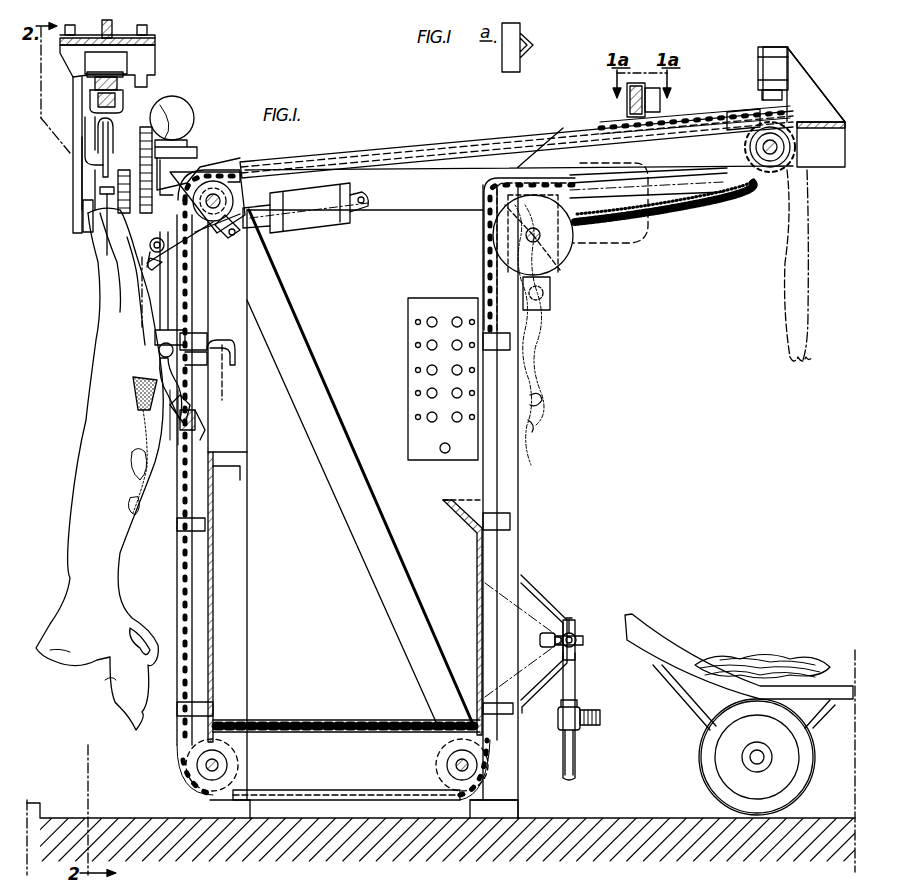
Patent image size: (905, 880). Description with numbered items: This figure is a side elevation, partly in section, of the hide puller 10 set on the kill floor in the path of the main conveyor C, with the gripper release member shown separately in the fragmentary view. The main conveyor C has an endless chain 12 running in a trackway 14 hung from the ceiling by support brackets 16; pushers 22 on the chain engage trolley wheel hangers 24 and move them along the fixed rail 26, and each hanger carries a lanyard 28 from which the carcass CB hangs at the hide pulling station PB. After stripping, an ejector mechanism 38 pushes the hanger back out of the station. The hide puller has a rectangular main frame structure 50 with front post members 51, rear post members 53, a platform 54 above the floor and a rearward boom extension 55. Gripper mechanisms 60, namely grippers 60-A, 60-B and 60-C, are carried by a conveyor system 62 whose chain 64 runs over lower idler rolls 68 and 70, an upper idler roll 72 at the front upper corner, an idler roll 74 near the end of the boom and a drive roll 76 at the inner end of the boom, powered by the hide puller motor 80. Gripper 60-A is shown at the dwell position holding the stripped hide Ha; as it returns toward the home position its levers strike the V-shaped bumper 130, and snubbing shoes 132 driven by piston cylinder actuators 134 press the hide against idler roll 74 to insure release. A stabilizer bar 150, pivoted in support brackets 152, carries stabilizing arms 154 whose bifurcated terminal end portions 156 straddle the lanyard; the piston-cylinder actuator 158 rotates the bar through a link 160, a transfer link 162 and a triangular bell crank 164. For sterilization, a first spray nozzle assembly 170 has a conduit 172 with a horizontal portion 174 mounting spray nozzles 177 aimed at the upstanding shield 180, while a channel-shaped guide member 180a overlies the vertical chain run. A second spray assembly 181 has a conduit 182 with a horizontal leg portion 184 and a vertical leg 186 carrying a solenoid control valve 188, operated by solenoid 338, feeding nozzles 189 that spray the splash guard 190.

In FIG. 1, the hide puller 10 is at (403, 210).
In FIG. 1, the endless chain 12 is at (107, 78).
In FIG. 1, the trackway 14 is at (97, 82).
In FIG. 1, the support brackets 16 is at (77, 54).
In FIG. 1, the pushers 22 is at (122, 111).
In FIG. 1, the trolley wheel hangers 24 is at (113, 148).
In FIG. 1, the fixed rail 26 is at (106, 173).
In FIG. 1, the lanyards 28 is at (103, 240).
In FIG. 1, the ejector mechanism 38 is at (185, 104).
In FIG. 1, the main frame structure 50 is at (520, 480).
In FIG. 1, the front post members 51 is at (242, 676).
In FIG. 1, the rear post members 53 is at (518, 795).
In FIG. 1, the platform 54 is at (334, 720).
In FIG. 1, the boom extension 55 is at (820, 165).
In FIG. 1, the gripper mechanisms 60 is at (190, 412).
In FIG. 1, the gripper mechanism 60-A is at (734, 112).
In FIG. 1, the gripper mechanism 60-B is at (193, 424).
In FIG. 1, the gripper mechanism 60-C is at (498, 610).
In FIG. 1, the conveyor system 62 is at (490, 262).
In FIG. 1, the chain 64 is at (484, 238).
In FIG. 1, the lower idler roll 68 is at (222, 768).
In FIG. 1, the lower idler roll 70 is at (447, 765).
In FIG. 1, the upper idler roll 72 is at (214, 193).
In FIG. 1, the idler roll 74 is at (776, 175).
In FIG. 1, the drive roll 76 is at (556, 262).
In FIG. 1, the hide puller motor 80 is at (627, 236).
In FIG. 1, the V-shaped bumper 130 is at (662, 104).
In FIG. 1A, the V-shaped bumper 130 is at (533, 44).
In FIG. 1, the snubbing shoes 132 is at (790, 100).
In FIG. 1, the piston cylinder actuators 134 is at (760, 62).
In FIG. 1, the bar 150 is at (80, 316).
In FIG. 1, the support brackets 152 is at (194, 268).
In FIG. 1, the stabilizing arms 154 is at (186, 290).
In FIG. 1, the bifurcated terminal end portions 156 is at (72, 228).
In FIG. 1, the piston-cylinder actuator 158 is at (312, 226).
In FIG. 1, the link 160 is at (100, 328).
In FIG. 1, the transfer link 162 is at (196, 240).
In FIG. 1, the bell crank 164 is at (266, 246).
In FIG. 1, the first spray nozzle assembly 170 is at (148, 366).
In FIG. 1, the conduit 172 is at (322, 364).
In FIG. 1, the lateral horizontally extending portion 174 is at (235, 363).
In FIG. 1, the spray nozzles 177 is at (150, 395).
In FIG. 1, the upstanding shield 180 is at (215, 581).
In FIG. 1, the channel-shaped guide member 180a is at (182, 700).
In FIG. 1, the second spray assembly 181 is at (610, 613).
In FIG. 1, the conduit 182 is at (624, 777).
In FIG. 1, the horizontal leg portion 184 is at (578, 646).
In FIG. 1, the vertical leg 186 is at (578, 745).
In FIG. 1, the solenoid control valve 188 is at (579, 718).
In FIG. 1, the nozzles 189 is at (553, 650).
In FIG. 1, the splash guard 190 is at (480, 577).
In FIG. 1, the solenoid 338 is at (601, 724).
In FIG. 1, the main conveyor C is at (158, 47).
In FIG. 1, the carcass CB is at (80, 520).
In FIG. 1, the hide pulling station PB is at (89, 463).
In FIG. 1, the stripped hide Ha is at (520, 370).